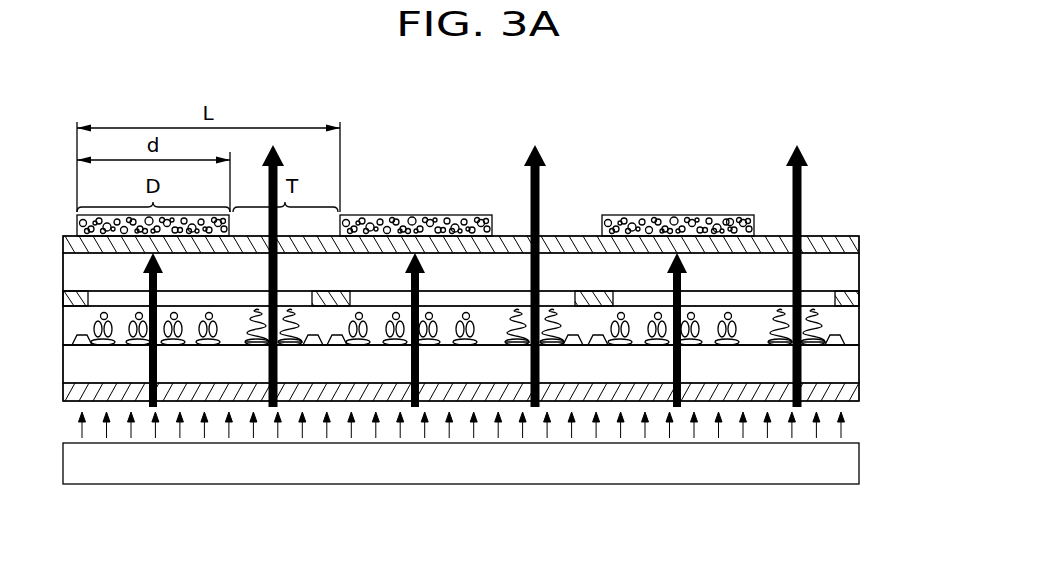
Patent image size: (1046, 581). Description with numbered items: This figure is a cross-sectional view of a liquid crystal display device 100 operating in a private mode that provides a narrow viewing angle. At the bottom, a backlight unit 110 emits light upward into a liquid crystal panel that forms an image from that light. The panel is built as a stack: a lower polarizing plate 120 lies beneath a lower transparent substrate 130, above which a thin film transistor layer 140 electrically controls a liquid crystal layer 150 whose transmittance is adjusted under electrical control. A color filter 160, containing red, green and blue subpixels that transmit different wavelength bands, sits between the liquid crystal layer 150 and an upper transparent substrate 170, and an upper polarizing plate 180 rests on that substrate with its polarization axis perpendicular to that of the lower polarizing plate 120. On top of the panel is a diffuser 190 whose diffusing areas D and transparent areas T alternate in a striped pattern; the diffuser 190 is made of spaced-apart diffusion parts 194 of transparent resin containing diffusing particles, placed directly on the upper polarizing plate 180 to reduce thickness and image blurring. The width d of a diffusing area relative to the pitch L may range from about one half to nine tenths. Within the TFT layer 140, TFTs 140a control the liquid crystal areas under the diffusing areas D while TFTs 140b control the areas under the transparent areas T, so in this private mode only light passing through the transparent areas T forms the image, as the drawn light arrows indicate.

The liquid crystal display device 100 is at (868, 192).
The backlight unit 110 is at (860, 463).
The lower polarizing plate 120 is at (860, 391).
The lower transparent substrate 130 is at (860, 370).
The thin film transistor (TFT) layer 140 is at (862, 344).
The TFTs 140a is at (82, 350).
The TFTs 140b is at (309, 350).
The liquid crystal layer 150 is at (860, 325).
The color filter 160 is at (860, 300).
The upper transparent substrate 170 is at (860, 275).
The upper polarizing plate 180 is at (860, 244).
The diffuser 190 is at (677, 198).
The diffusion parts 194 is at (740, 213).